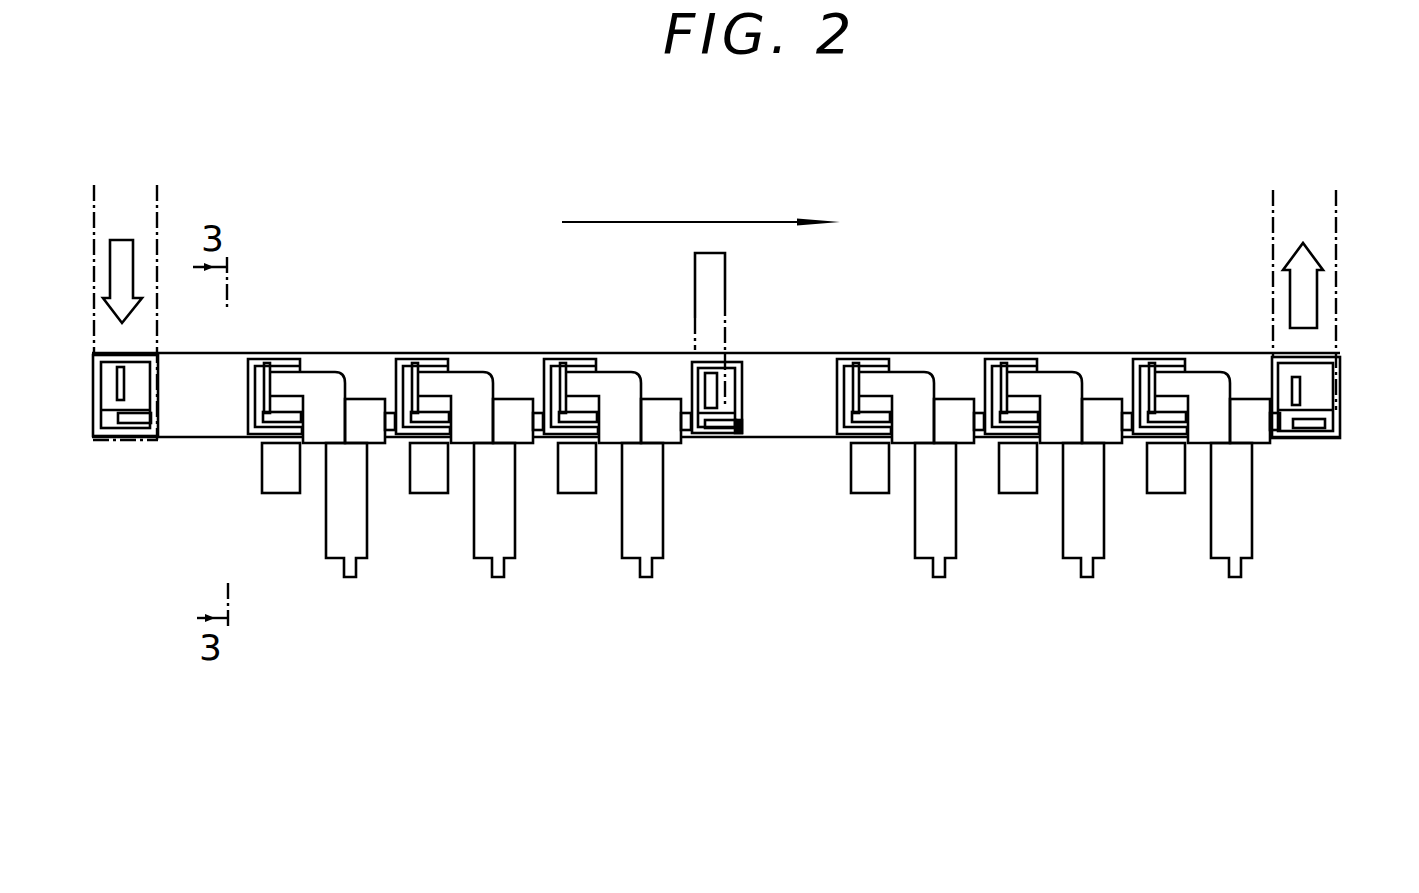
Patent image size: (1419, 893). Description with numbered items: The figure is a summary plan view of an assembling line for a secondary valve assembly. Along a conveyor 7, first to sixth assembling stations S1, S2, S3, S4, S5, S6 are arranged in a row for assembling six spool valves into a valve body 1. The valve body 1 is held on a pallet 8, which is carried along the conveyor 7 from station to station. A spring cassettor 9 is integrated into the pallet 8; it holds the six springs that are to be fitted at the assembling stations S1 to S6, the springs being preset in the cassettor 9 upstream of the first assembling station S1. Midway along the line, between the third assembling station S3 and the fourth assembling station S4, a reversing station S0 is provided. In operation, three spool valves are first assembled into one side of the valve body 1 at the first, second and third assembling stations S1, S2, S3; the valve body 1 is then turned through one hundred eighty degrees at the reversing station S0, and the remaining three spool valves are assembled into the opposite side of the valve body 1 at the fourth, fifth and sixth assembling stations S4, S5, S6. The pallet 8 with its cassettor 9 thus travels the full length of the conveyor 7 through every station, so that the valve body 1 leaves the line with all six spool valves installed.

The valve body 1 is at (127, 368).
The conveyor 7 is at (810, 363).
The pallet 8 is at (145, 390).
The spring cassettor 9 is at (142, 425).
The reversing station S0 is at (738, 323).
The first assembling station S1 is at (329, 352).
The second assembling station S2 is at (464, 351).
The third assembling station S3 is at (616, 350).
The fourth assembling station S4 is at (886, 352).
The fifth assembling station S5 is at (1019, 351).
The sixth assembling station S6 is at (1166, 352).